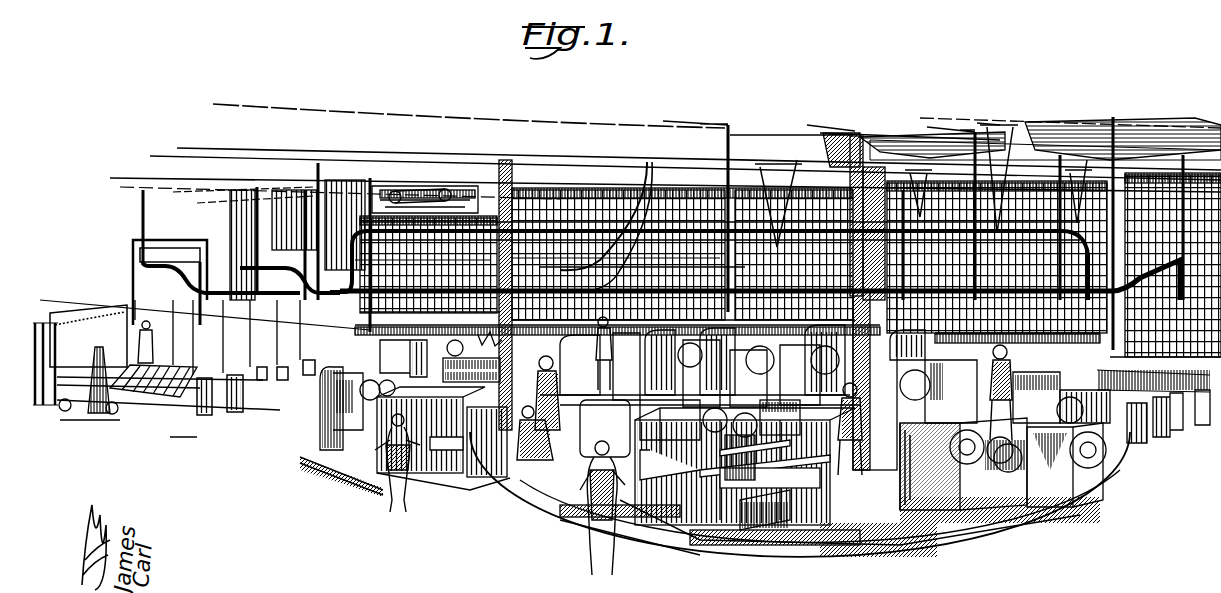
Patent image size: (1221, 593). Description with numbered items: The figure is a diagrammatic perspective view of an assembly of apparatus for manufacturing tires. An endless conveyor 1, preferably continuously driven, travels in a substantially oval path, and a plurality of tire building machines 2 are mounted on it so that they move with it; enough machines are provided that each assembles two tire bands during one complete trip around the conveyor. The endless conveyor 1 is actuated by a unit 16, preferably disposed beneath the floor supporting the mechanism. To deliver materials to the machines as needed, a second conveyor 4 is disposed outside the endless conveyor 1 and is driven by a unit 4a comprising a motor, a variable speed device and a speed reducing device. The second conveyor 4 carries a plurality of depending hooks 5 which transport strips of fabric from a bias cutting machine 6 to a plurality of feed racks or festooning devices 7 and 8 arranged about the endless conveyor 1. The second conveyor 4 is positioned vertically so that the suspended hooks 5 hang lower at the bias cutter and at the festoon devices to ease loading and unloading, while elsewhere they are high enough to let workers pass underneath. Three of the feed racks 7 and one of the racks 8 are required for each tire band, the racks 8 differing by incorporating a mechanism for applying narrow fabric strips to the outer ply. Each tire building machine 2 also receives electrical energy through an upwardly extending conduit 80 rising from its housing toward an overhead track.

The endless conveyor 1 is at (874, 547).
The tire building machines 2 is at (1120, 477).
The second conveyor 4 is at (232, 272).
The unit 4a is at (414, 192).
The depending hooks 5 is at (263, 397).
The bias cutting machine 6 is at (177, 383).
The feed racks 7 is at (362, 486).
The feed racks 8 is at (785, 540).
The unit 16 is at (448, 362).
The conduit 80 is at (648, 170).